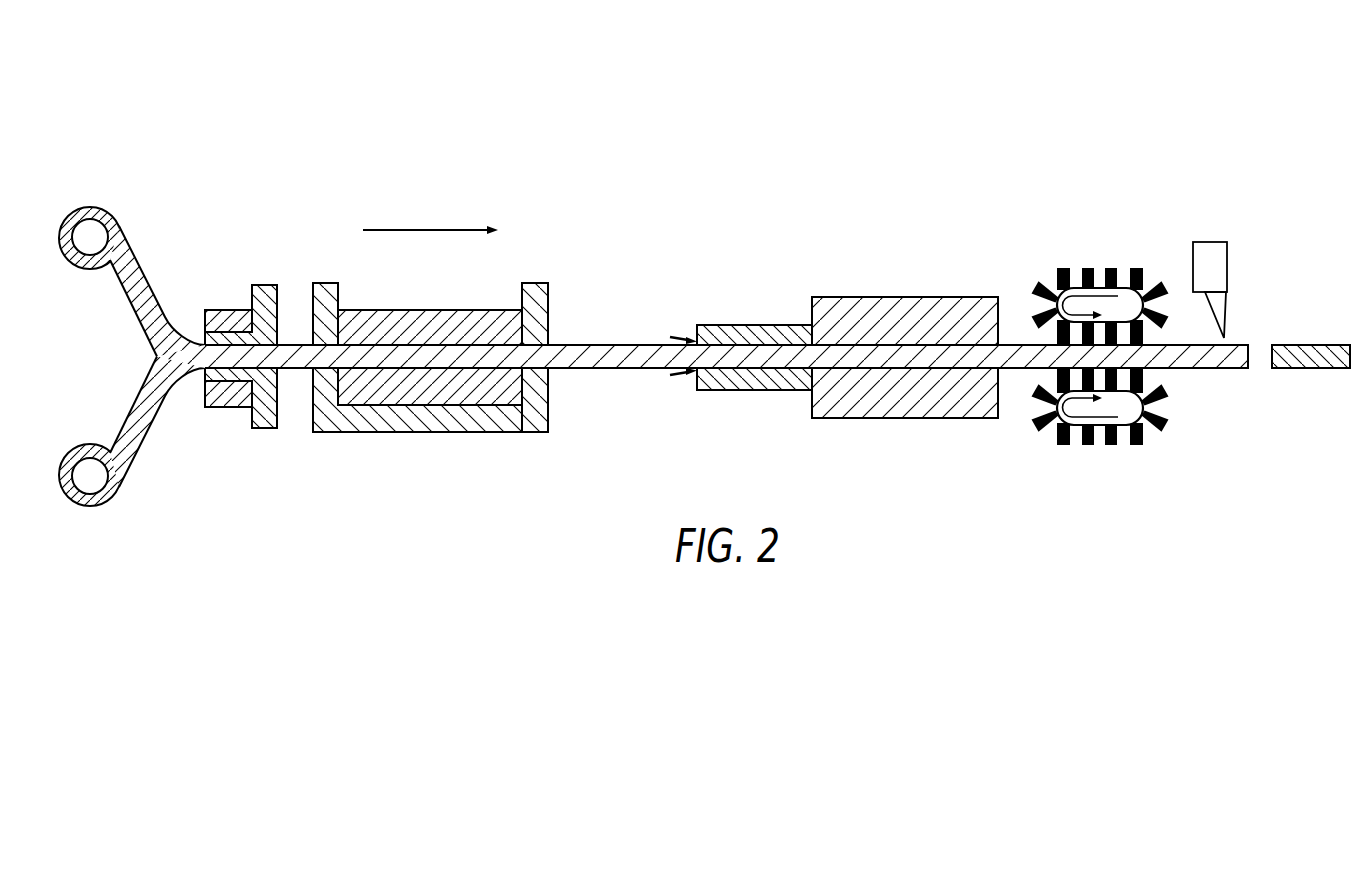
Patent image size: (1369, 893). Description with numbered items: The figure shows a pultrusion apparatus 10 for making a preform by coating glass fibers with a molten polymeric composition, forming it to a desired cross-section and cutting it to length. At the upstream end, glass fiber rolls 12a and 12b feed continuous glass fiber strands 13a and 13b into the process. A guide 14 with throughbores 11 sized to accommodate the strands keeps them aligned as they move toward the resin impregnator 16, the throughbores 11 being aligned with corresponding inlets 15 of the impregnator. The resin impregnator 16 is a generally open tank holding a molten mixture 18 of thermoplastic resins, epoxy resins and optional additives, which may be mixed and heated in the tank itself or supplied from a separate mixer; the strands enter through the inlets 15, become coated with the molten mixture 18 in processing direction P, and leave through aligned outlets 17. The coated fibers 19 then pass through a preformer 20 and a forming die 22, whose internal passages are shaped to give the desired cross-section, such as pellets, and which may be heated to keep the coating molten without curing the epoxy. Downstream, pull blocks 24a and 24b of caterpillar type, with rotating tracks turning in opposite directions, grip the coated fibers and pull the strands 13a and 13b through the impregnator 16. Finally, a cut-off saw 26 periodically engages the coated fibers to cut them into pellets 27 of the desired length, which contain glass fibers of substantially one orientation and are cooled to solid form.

The pultrusion apparatus 10 is at (195, 101).
The throughbore 11 is at (276, 397).
The glass fiber roll 12a is at (90, 207).
The glass fiber roll 12b is at (90, 490).
The glass fiber strand 13a is at (124, 278).
The glass fiber strand 13b is at (122, 420).
The guide 14 is at (212, 310).
The inlet 15 is at (300, 335).
The resin impregnator 16 is at (415, 433).
The outlet 17 is at (549, 342).
The molten mixture 18 is at (428, 324).
The coated fibers 19 is at (617, 368).
The preformer 20 is at (733, 323).
The forming die 22 is at (907, 418).
The pull block 24a is at (1089, 270).
The pull block 24b is at (1112, 447).
The cut-off saw 26 is at (1255, 286).
The pellets 27 is at (1305, 368).